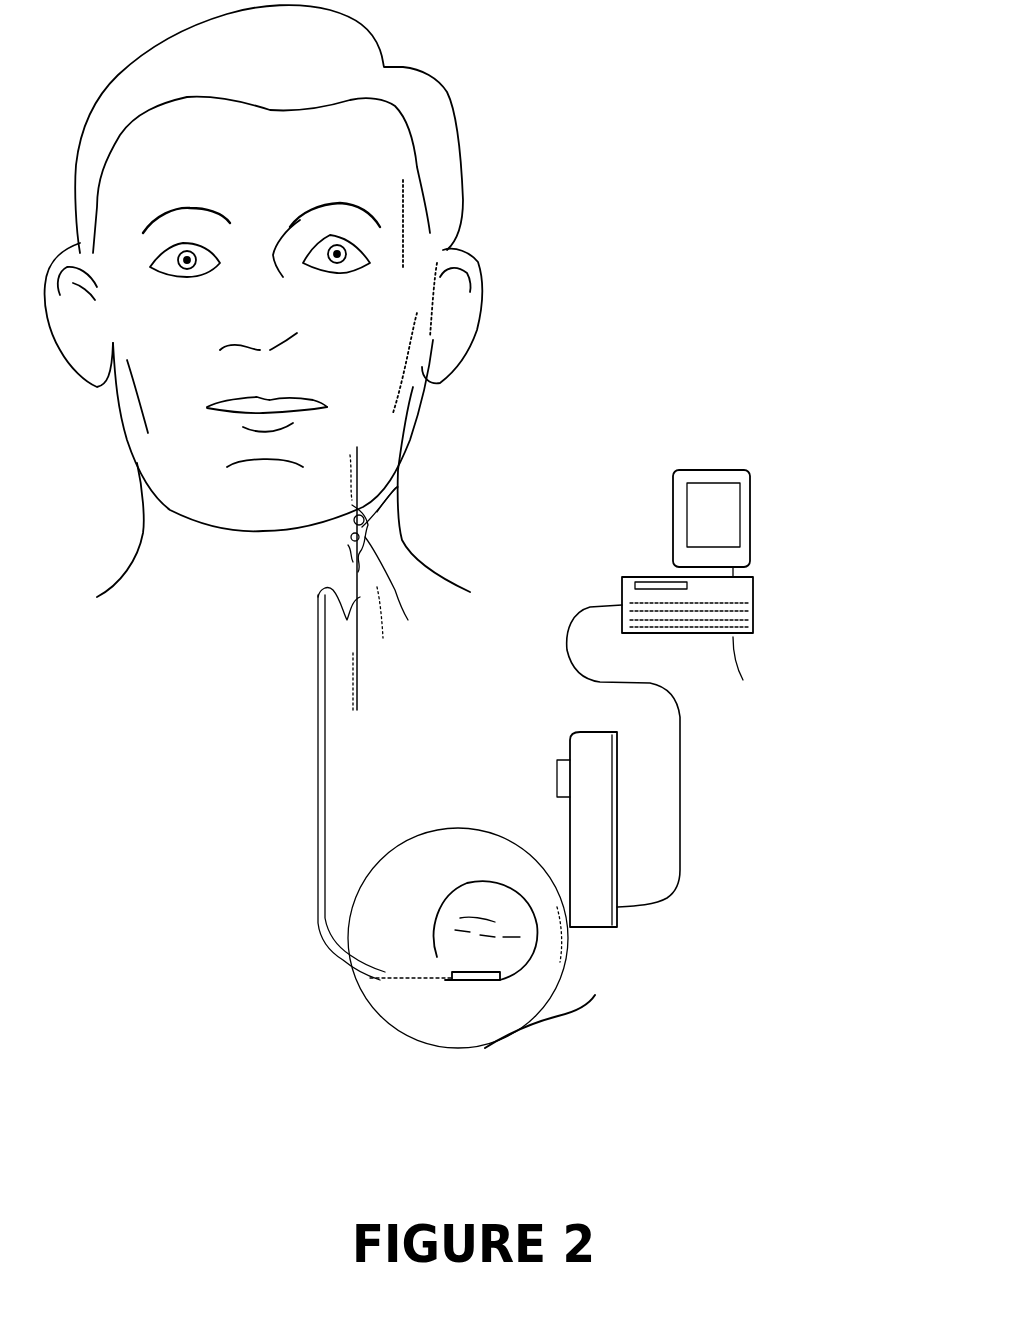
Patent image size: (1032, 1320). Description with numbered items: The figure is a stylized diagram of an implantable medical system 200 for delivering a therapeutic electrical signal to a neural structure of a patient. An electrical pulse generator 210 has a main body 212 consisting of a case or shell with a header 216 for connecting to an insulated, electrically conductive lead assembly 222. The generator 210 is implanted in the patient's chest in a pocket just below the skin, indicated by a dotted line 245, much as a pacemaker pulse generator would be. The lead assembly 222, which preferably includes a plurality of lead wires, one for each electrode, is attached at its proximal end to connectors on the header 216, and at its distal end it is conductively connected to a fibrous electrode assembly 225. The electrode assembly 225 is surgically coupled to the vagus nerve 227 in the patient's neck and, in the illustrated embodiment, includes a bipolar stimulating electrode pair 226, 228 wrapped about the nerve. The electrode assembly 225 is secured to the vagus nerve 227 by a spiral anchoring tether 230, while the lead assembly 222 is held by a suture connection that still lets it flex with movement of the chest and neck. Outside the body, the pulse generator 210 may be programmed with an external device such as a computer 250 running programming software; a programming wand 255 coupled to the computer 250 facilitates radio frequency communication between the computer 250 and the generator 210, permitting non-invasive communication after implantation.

The implantable medical system 200 is at (790, 257).
The electrical pulse generator 210 is at (422, 946).
The main body 212 is at (508, 905).
The header 216 is at (487, 982).
The lead assembly 222 is at (317, 750).
The fibrous electrode assembly 225 is at (322, 565).
The stimulating electrode 226 is at (397, 518).
The vagus nerve 227 is at (397, 475).
The stimulating electrode 228 is at (423, 587).
The spiral anchoring tether 230 is at (400, 673).
The dotted line 245 is at (491, 938).
The computer 250 is at (716, 588).
The programming wand 255 is at (570, 742).